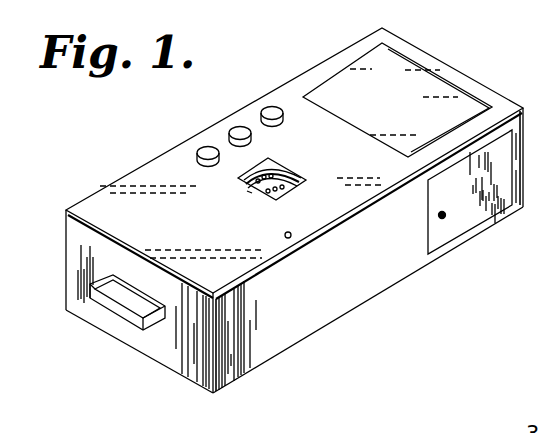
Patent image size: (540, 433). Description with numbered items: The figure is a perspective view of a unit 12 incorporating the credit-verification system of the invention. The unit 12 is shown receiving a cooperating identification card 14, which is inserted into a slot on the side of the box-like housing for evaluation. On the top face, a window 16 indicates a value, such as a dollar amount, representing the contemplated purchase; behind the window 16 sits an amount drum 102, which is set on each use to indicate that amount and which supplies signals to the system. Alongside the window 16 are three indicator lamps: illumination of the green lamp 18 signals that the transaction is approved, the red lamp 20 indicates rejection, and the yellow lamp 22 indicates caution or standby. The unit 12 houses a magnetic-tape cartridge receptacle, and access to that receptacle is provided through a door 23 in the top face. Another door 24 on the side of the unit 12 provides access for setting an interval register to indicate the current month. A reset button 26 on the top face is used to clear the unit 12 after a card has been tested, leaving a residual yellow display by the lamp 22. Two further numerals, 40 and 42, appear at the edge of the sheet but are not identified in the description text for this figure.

The unit 12 is at (338, 44).
The identification card 14 is at (110, 313).
The window 16 is at (286, 163).
The green lamp 18 is at (203, 148).
The red lamp 20 is at (270, 106).
The yellow lamp 22 is at (240, 128).
The door 23 is at (430, 83).
The door 24 is at (502, 169).
The reset button 26 is at (291, 234).
The element 40 is at (539, 345).
The element 42 is at (539, 386).
The amount drum 102 is at (293, 186).